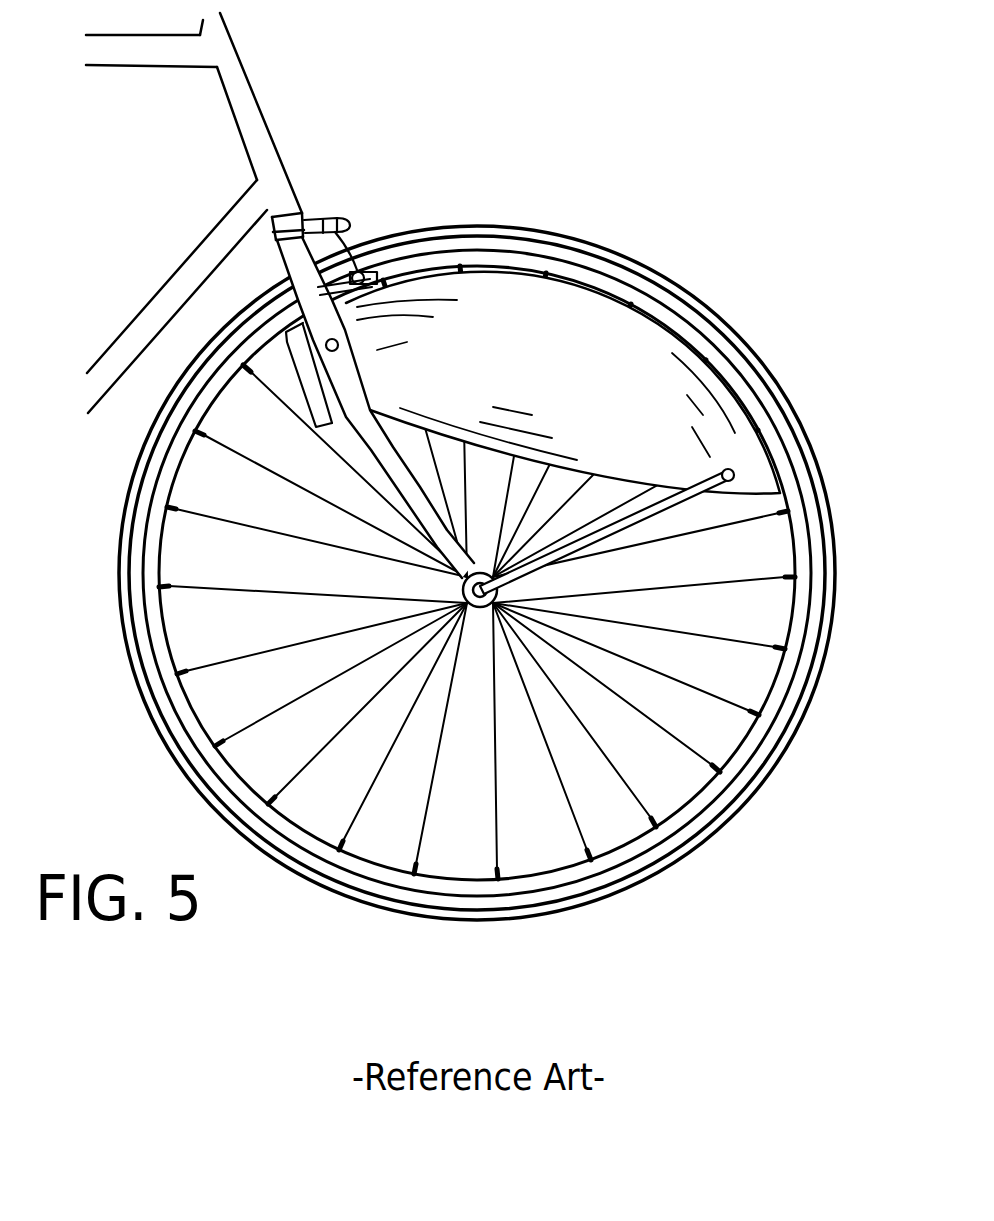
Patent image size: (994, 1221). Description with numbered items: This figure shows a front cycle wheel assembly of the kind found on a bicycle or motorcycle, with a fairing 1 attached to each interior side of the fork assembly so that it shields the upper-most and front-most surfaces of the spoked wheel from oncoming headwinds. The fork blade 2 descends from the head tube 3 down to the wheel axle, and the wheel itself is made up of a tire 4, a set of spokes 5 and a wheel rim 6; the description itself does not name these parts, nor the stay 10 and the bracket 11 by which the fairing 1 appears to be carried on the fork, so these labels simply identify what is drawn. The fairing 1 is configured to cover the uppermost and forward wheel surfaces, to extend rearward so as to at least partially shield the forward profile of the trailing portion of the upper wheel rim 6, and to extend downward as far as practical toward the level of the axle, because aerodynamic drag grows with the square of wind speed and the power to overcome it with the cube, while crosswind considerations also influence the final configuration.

The fairing 1 is at (548, 347).
The fork blade 2 is at (377, 450).
The head tube 3 is at (247, 110).
The tire 4 is at (753, 768).
The spoke 5 is at (300, 717).
The rim 6 is at (777, 695).
The fender stay 10 is at (637, 518).
The mounting bracket 11 is at (300, 333).